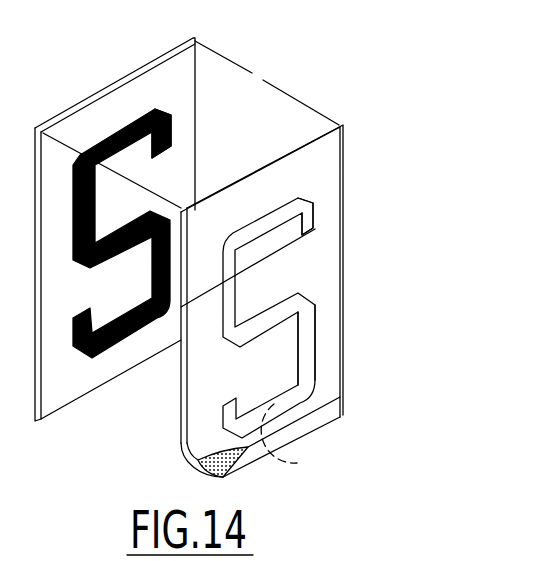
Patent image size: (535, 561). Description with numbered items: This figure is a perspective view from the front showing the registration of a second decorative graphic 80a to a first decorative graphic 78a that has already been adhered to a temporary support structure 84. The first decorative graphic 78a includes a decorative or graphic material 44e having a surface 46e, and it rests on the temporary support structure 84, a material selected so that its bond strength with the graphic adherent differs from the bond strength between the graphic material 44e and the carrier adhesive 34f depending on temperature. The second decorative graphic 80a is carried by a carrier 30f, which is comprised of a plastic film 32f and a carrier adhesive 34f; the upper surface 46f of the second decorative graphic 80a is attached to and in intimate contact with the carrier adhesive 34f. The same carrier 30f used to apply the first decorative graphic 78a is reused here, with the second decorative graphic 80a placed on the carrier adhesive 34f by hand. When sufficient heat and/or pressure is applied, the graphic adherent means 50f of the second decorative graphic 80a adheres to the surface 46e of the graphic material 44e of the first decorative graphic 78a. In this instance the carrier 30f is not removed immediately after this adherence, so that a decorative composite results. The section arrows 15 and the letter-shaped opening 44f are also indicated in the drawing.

The first decorative graphic 78a is at (117, 99).
The temporary support structure 84 is at (57, 410).
The graphic material 44e is at (181, 137).
The surface of graphic material 46e is at (165, 113).
The carrier 30f is at (340, 397).
The plastic film 32f is at (182, 446).
The carrier adhesive 34f is at (236, 473).
The letter-shaped opening 44f is at (326, 215).
The upper surface of second decorative graphic 46f is at (306, 204).
The second decorative graphic 80a is at (307, 315).
The graphic adherent means 50f is at (311, 440).
The section line for FIG. 15 is at (252, 260).